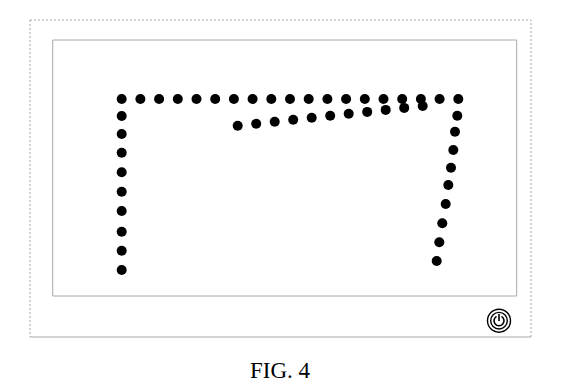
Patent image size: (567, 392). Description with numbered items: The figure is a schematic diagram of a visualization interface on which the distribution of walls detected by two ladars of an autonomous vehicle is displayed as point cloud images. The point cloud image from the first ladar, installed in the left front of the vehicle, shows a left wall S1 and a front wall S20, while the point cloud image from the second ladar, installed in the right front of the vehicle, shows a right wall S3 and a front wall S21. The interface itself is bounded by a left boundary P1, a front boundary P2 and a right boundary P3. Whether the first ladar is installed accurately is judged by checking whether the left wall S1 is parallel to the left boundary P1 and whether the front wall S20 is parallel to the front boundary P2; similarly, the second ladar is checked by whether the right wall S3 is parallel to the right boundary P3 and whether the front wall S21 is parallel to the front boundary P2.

The left boundary P1 is at (69, 168).
The front boundary P2 is at (285, 55).
The right boundary P3 is at (504, 168).
The left wall S1 is at (139, 193).
The front wall S20 is at (290, 85).
The front wall S21 is at (330, 132).
The right wall S3 is at (440, 188).